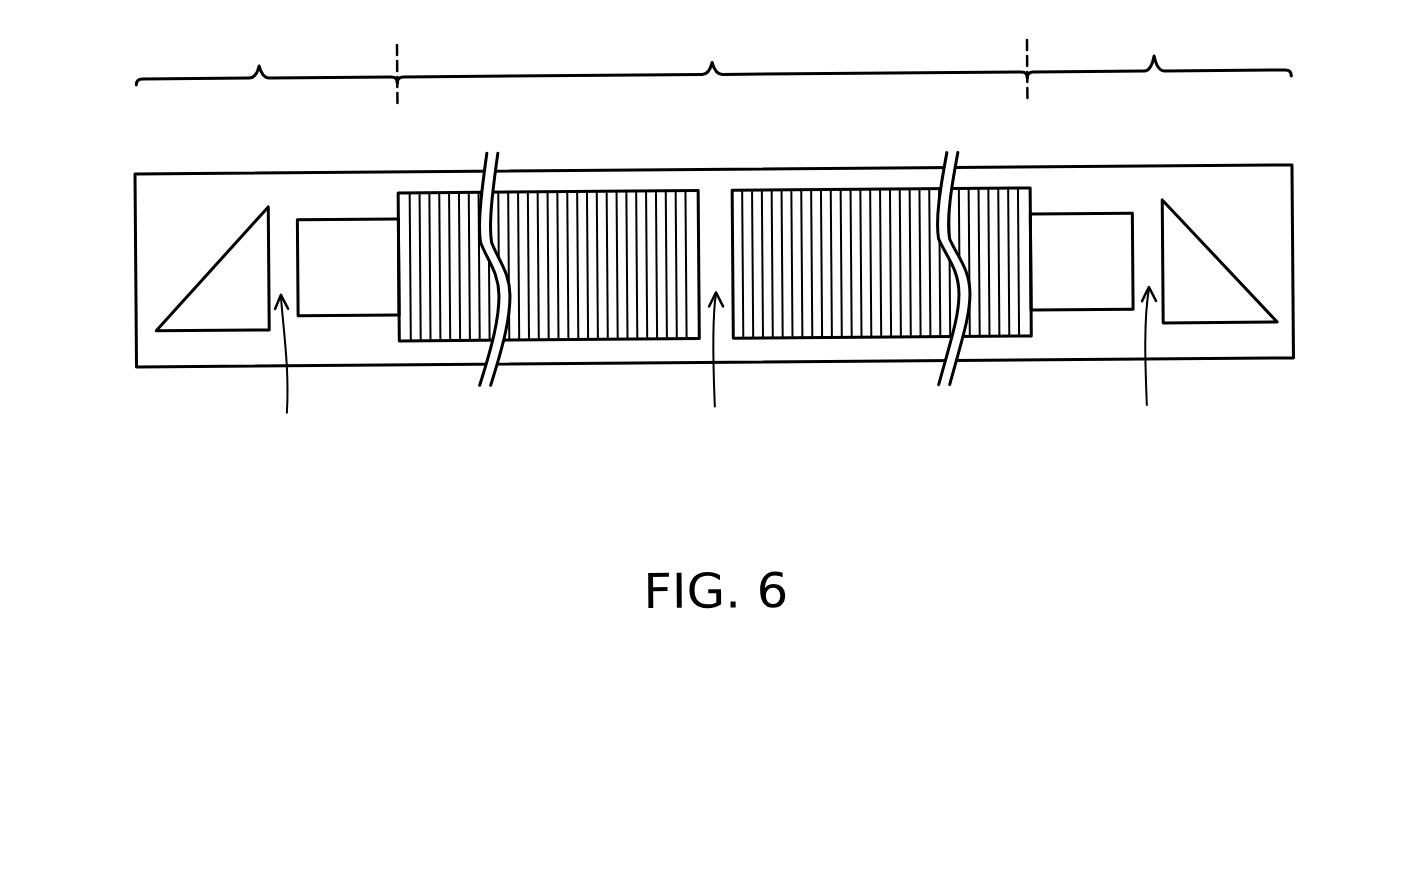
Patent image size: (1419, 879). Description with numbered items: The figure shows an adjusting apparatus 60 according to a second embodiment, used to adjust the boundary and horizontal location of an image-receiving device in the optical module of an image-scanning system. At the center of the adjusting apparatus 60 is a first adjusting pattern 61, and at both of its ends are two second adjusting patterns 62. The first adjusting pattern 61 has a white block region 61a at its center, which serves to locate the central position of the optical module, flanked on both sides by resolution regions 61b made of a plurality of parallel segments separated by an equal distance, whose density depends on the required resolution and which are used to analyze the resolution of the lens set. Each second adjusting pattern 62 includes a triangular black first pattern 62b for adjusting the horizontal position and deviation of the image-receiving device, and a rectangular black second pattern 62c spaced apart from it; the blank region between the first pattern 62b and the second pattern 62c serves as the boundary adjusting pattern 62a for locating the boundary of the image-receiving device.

The adjusting apparatus 60 is at (1294, 192).
The first adjusting pattern 61 is at (712, 50).
The white block region 61a is at (717, 370).
The resolution regions 61b is at (627, 322).
The second adjusting patterns 62 is at (714, 62).
The boundary adjusting pattern 62a is at (720, 370).
The first pattern 62b is at (223, 303).
The second pattern 62c is at (338, 288).